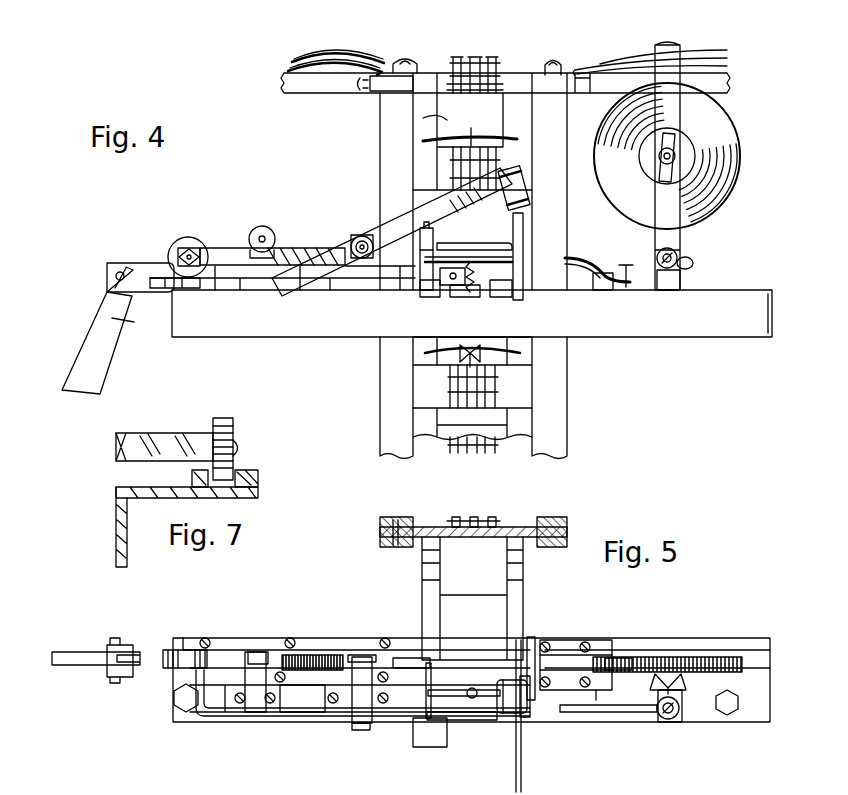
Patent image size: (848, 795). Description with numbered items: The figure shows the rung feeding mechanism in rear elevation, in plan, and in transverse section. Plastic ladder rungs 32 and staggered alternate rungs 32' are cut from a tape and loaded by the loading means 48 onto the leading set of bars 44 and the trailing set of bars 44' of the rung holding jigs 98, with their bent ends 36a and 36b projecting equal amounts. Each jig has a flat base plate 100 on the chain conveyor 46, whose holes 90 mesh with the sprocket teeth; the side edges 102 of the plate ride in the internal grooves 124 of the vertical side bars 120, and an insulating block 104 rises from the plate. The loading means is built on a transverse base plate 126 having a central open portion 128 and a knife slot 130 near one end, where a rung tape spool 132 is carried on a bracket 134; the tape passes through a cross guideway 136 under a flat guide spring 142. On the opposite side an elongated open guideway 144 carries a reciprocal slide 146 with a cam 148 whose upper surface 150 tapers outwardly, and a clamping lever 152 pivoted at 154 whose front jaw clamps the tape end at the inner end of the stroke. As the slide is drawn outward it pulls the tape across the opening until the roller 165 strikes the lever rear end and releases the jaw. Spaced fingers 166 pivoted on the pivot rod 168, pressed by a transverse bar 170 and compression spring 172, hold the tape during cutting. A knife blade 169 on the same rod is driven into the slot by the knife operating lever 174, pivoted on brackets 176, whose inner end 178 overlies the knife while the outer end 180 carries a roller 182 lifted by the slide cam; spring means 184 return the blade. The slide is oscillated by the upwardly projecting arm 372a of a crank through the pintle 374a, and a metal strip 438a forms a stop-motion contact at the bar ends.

In FIG. 4, the plastic ladder rung 32 is at (475, 58).
In FIG. 4, the alternate plastic rung 32' is at (494, 150).
In FIG. 4, the rung end 36a is at (400, 93).
In FIG. 4, the rung end 36b is at (500, 96).
In FIG. 4, the leading set of bars 44 is at (488, 64).
In FIG. 4, the trailing set of bars 44' is at (470, 129).
In FIG. 4, the chain conveyor 46 is at (450, 165).
In FIG. 5, the chain conveyor 46 is at (472, 517).
In FIG. 4, the loading means 48 is at (334, 196).
In FIG. 5, the loading means 48 is at (358, 592).
In FIG. 4, the holes 90 is at (455, 400).
In FIG. 4, the rung holding jig 98 is at (440, 127).
In FIG. 5, the rung holding jig 98 is at (440, 585).
In FIG. 4, the flat base plate 100 is at (423, 118).
In FIG. 5, the flat base plate 100 is at (510, 527).
In FIG. 5, the side edges 102 is at (418, 505).
In FIG. 5, the insulating block 104 is at (620, 789).
In FIG. 4, the vertical side bars 120 is at (380, 362).
In FIG. 5, the vertical side bars 120 is at (405, 537).
In FIG. 5, the internal grooves 124 is at (400, 517).
In FIG. 4, the transverse base plate 126 is at (674, 337).
In FIG. 7, the transverse base plate 126 is at (116, 537).
In FIG. 5, the transverse base plate 126 is at (712, 720).
In FIG. 5, the central open portion 128 is at (530, 640).
In FIG. 5, the knife slot 130 is at (534, 648).
In FIG. 4, the rung tape spool 132 is at (726, 203).
In FIG. 5, the rung tape spool 132 is at (692, 657).
In FIG. 4, the bracket 134 is at (680, 252).
In FIG. 5, the bracket 134 is at (678, 674).
In FIG. 4, the cross guideway 136 is at (555, 289).
In FIG. 5, the cross guideway 136 is at (598, 660).
In FIG. 4, the flat guide spring 142 is at (626, 270).
In FIG. 5, the flat guide spring 142 is at (626, 664).
In FIG. 7, the elongated open guideway 144 is at (258, 472).
In FIG. 5, the elongated open guideway 144 is at (233, 652).
In FIG. 4, the reciprocal slide 146 is at (156, 278).
In FIG. 7, the reciprocal slide 146 is at (235, 488).
In FIG. 5, the reciprocal slide 146 is at (262, 652).
In FIG. 4, the cam 148 is at (333, 286).
In FIG. 5, the cam 148 is at (365, 652).
In FIG. 4, the upper surface 150 is at (283, 288).
In FIG. 5, the upper surface 150 is at (332, 645).
In FIG. 4, the clamping lever 152 is at (440, 280).
In FIG. 5, the clamping lever 152 is at (405, 656).
In FIG. 4, the pivot 154 is at (392, 233).
In FIG. 4, the roller 165 is at (267, 226).
In FIG. 5, the roller 165 is at (310, 655).
In FIG. 4, the spaced fingers 166 is at (516, 250).
In FIG. 5, the spaced fingers 166 is at (427, 702).
In FIG. 5, the pivot rod 168 is at (407, 740).
In FIG. 5, the knife blade 169 is at (565, 663).
In FIG. 4, the transverse bar 170 is at (462, 258).
In FIG. 5, the transverse bar 170 is at (455, 690).
In FIG. 4, the compression spring 172 is at (466, 300).
In FIG. 4, the knife operating lever 174 is at (320, 246).
In FIG. 7, the knife operating lever 174 is at (128, 420).
In FIG. 5, the knife operating lever 174 is at (301, 718).
In FIG. 4, the brackets 176 is at (405, 278).
In FIG. 5, the brackets 176 is at (360, 704).
In FIG. 4, the inner end 178 is at (512, 168).
In FIG. 5, the inner end 178 is at (487, 727).
In FIG. 4, the outer end 180 is at (186, 240).
In FIG. 4, the roller 182 is at (180, 242).
In FIG. 7, the roller 182 is at (231, 422).
In FIG. 5, the roller 182 is at (178, 650).
In FIG. 4, the spring means 184 is at (598, 272).
In FIG. 5, the spring means 184 is at (623, 712).
In FIG. 4, the upwardly projecting arm 372a is at (86, 328).
In FIG. 5, the upwardly projecting arm 372a is at (78, 652).
In FIG. 4, the pintle 374a is at (108, 272).
In FIG. 5, the pintle 374a is at (118, 638).
In FIG. 4, the metal strip 438a is at (440, 88).